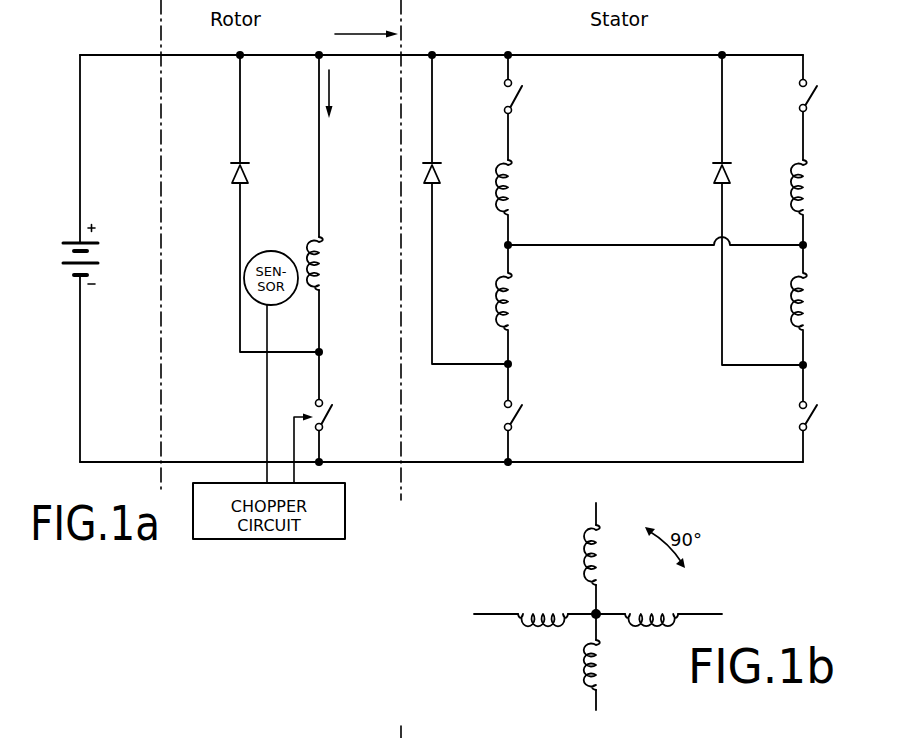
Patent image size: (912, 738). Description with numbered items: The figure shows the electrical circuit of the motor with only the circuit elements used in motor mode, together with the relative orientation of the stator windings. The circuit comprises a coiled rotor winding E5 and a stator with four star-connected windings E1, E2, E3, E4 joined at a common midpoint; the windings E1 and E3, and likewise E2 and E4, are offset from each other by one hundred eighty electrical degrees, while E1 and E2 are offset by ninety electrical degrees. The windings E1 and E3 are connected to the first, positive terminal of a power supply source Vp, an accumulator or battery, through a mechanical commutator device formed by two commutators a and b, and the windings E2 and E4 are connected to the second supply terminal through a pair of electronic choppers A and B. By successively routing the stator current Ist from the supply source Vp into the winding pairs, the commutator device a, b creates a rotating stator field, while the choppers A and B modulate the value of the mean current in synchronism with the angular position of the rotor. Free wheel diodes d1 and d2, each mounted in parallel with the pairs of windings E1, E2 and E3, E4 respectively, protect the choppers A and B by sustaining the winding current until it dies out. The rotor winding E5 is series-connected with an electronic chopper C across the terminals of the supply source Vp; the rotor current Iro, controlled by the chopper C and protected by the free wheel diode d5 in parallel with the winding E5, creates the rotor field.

In FIG. 1A, the power supply source Vp is at (97, 255).
In FIG. 1A, the stator current Ist is at (366, 23).
In FIG. 1A, the rotor current Iro is at (344, 94).
In FIG. 1A, the free wheel diode d5 is at (258, 203).
In FIG. 1A, the rotor winding E5 is at (334, 203).
In FIG. 1A, the chopper C is at (321, 417).
In FIG. 1A, the free wheel diode d1 is at (465, 209).
In FIG. 1A, the free wheel diode d2 is at (742, 210).
In FIG. 1A, the stator winding E1 is at (524, 202).
In FIG. 1B, the stator winding E1 is at (611, 555).
In FIG. 1A, the stator winding E2 is at (523, 304).
In FIG. 1B, the stator winding E2 is at (651, 601).
In FIG. 1A, the stator winding E3 is at (818, 202).
In FIG. 1B, the stator winding E3 is at (612, 665).
In FIG. 1A, the stator winding E4 is at (818, 305).
In FIG. 1B, the stator winding E4 is at (543, 601).
In FIG. 1A, the commutator a is at (521, 107).
In FIG. 1A, the commutator b is at (817, 107).
In FIG. 1A, the chopper A is at (523, 413).
In FIG. 1A, the chopper B is at (819, 413).